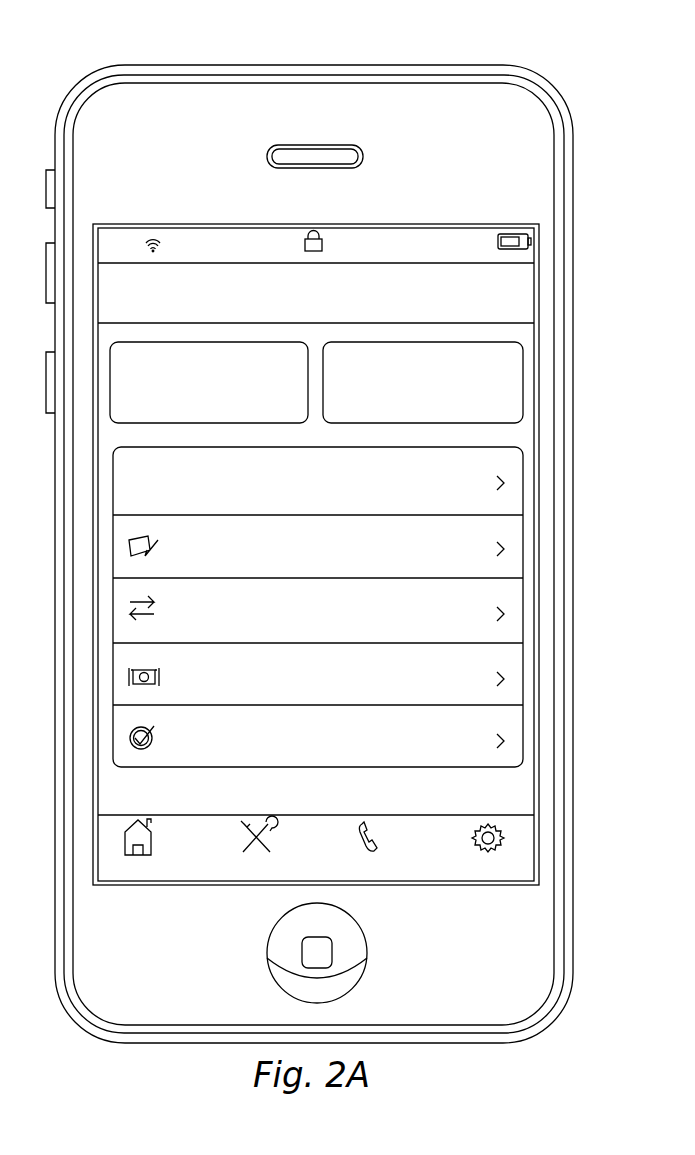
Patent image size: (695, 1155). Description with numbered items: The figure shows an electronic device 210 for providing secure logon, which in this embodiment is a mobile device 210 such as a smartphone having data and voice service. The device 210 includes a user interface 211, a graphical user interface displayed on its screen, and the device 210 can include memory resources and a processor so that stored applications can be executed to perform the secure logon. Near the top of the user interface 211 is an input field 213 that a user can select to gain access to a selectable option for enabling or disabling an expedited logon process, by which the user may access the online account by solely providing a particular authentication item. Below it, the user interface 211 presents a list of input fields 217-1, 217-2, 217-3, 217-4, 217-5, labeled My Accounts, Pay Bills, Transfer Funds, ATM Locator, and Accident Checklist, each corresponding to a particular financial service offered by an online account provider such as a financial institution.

The electronic device 210 is at (69, 72).
The user interface 211 is at (517, 789).
The input field 213 is at (299, 367).
The input field 217-1 is at (511, 471).
The input field 217-2 is at (511, 537).
The input field 217-3 is at (511, 601).
The input field 217-4 is at (511, 664).
The input field 217-5 is at (511, 727).